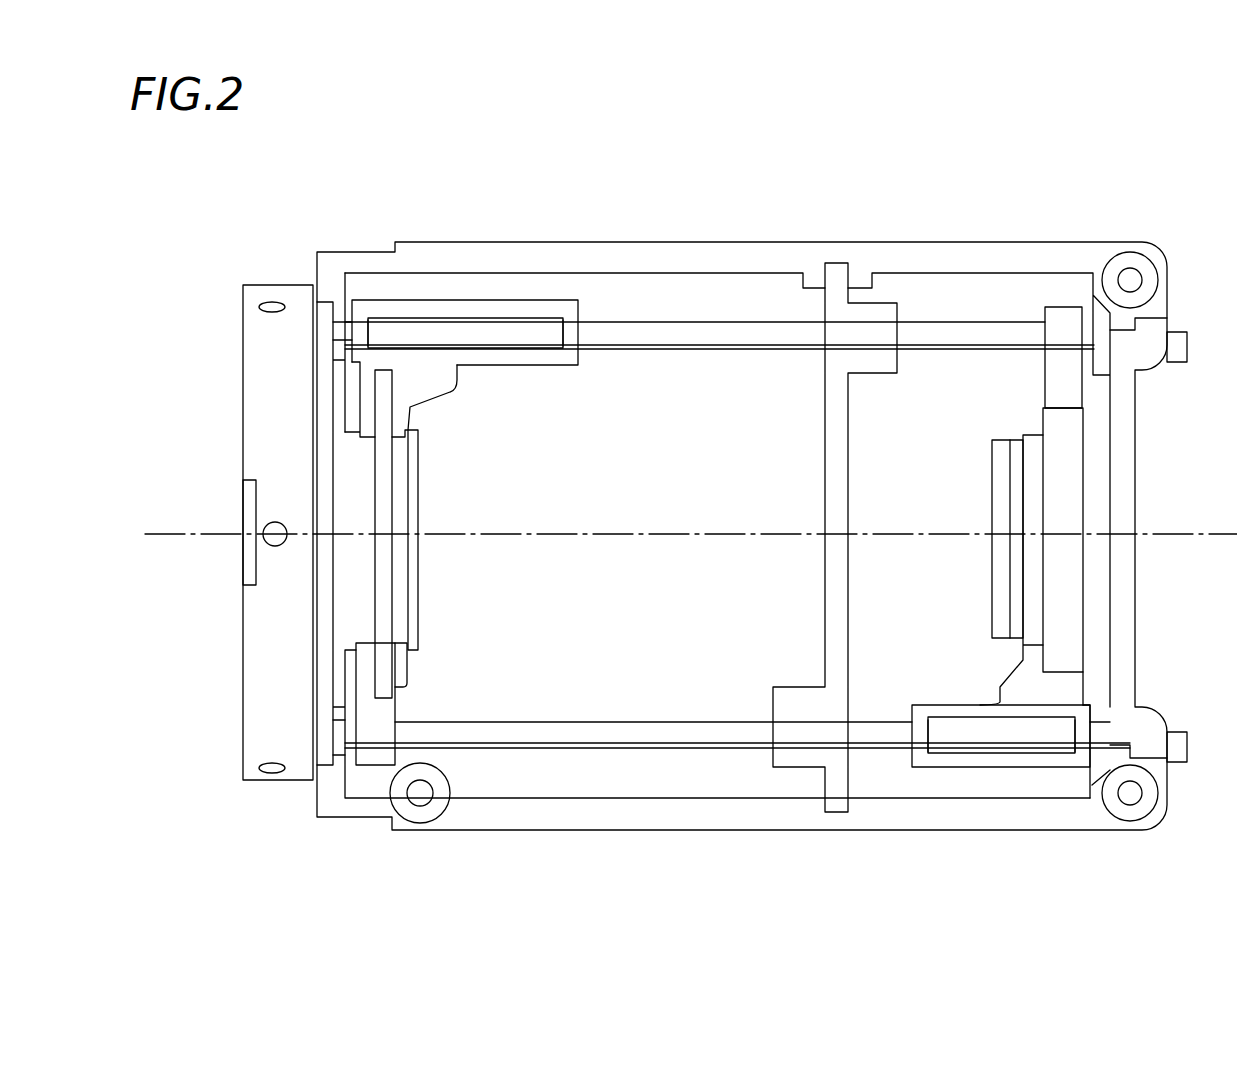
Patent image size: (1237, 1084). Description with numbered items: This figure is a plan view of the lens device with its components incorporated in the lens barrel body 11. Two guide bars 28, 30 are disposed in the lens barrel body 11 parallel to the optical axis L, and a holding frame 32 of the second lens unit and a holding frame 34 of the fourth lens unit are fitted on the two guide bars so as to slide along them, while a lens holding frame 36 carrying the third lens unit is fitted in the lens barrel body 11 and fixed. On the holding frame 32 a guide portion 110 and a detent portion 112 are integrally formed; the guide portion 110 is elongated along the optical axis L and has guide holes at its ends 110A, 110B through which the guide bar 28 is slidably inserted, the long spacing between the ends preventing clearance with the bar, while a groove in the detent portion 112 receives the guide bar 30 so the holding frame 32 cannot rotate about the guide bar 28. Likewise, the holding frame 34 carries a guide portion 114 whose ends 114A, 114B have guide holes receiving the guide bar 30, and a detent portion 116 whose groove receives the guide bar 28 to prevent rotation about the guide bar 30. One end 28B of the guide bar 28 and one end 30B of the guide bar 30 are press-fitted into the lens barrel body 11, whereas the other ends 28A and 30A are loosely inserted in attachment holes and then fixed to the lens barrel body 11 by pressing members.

The lens barrel body 11 is at (896, 232).
The guide bar 28 is at (663, 313).
The other end of guide bar 28 28A is at (1090, 337).
The one end of guide bar 28 28B is at (348, 337).
The guide bar 30 is at (604, 763).
The other end of guide bar 30 30A is at (1097, 737).
The one end of guide bar 30 30B is at (350, 732).
The holding frame 32 is at (407, 510).
The holding frame 34 is at (1065, 520).
The lens holding frame 36 is at (848, 488).
The guide portion 110 is at (473, 286).
The end of guide portion 110 110A is at (368, 337).
The end of guide portion 110 110B is at (570, 333).
The detent portion 112 is at (383, 755).
The guide portion 114 is at (1003, 783).
The end of guide portion 114 114A is at (922, 752).
The end of guide portion 114 114B is at (1080, 735).
The detent portion 116 is at (1065, 317).
The optical axis L is at (206, 524).